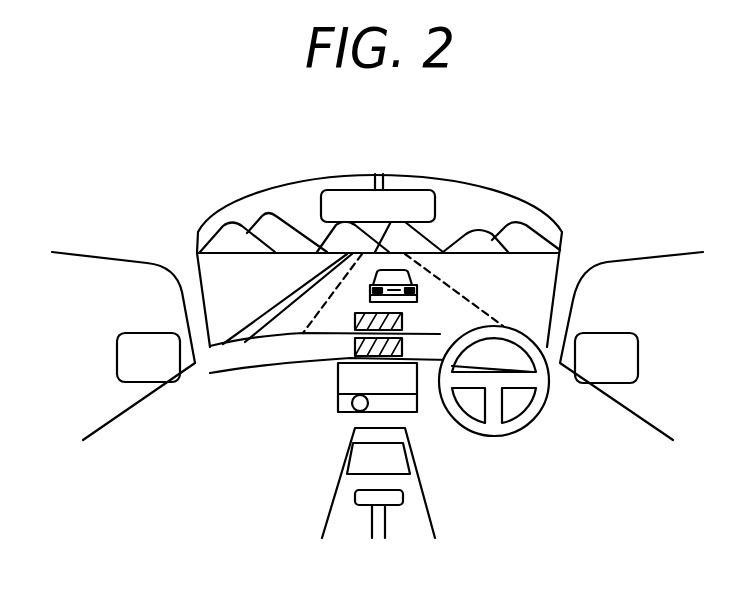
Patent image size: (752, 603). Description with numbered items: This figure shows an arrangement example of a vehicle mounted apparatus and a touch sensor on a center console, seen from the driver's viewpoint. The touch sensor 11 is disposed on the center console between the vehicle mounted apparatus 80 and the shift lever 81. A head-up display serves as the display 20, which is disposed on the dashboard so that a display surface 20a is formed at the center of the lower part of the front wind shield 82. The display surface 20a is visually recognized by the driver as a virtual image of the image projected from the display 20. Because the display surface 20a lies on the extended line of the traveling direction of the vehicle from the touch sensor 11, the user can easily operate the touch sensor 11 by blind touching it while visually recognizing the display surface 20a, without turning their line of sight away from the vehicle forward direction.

The touch sensor 11 is at (352, 454).
The display 20 is at (355, 348).
The display surface 20a is at (355, 322).
The vehicle mounted apparatus 80 is at (408, 413).
The shift lever 81 is at (355, 496).
The front wind shield 82 is at (480, 186).